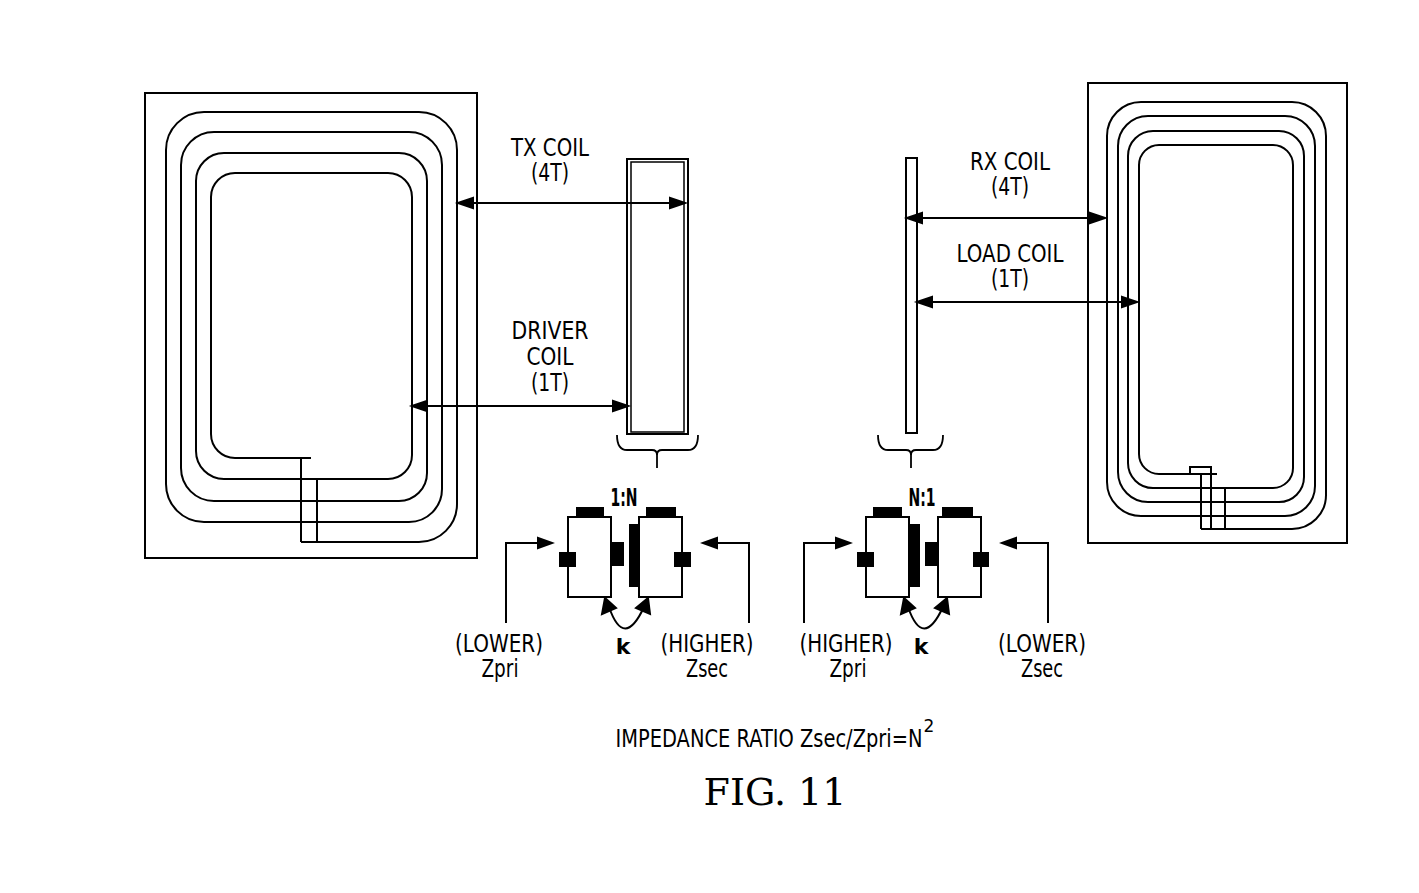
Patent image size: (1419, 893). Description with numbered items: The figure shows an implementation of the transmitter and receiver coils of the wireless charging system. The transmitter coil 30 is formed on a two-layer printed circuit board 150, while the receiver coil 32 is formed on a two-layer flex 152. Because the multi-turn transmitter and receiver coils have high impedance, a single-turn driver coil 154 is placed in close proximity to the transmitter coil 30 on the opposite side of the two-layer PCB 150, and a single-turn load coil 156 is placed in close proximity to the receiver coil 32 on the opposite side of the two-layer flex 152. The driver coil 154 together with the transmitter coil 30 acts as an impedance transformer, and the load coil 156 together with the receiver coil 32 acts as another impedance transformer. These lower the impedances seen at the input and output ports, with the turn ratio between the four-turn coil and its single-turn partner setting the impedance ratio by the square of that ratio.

The transmitter coil 30 is at (237, 110).
The receiver coil 32 is at (1216, 102).
The two-layer Printed Circuit Board (PCB) 150 is at (311, 93).
The two-layer flex 152 is at (909, 158).
The single-turn driver coil 154 is at (282, 458).
The single-turn load coil 156 is at (1140, 268).